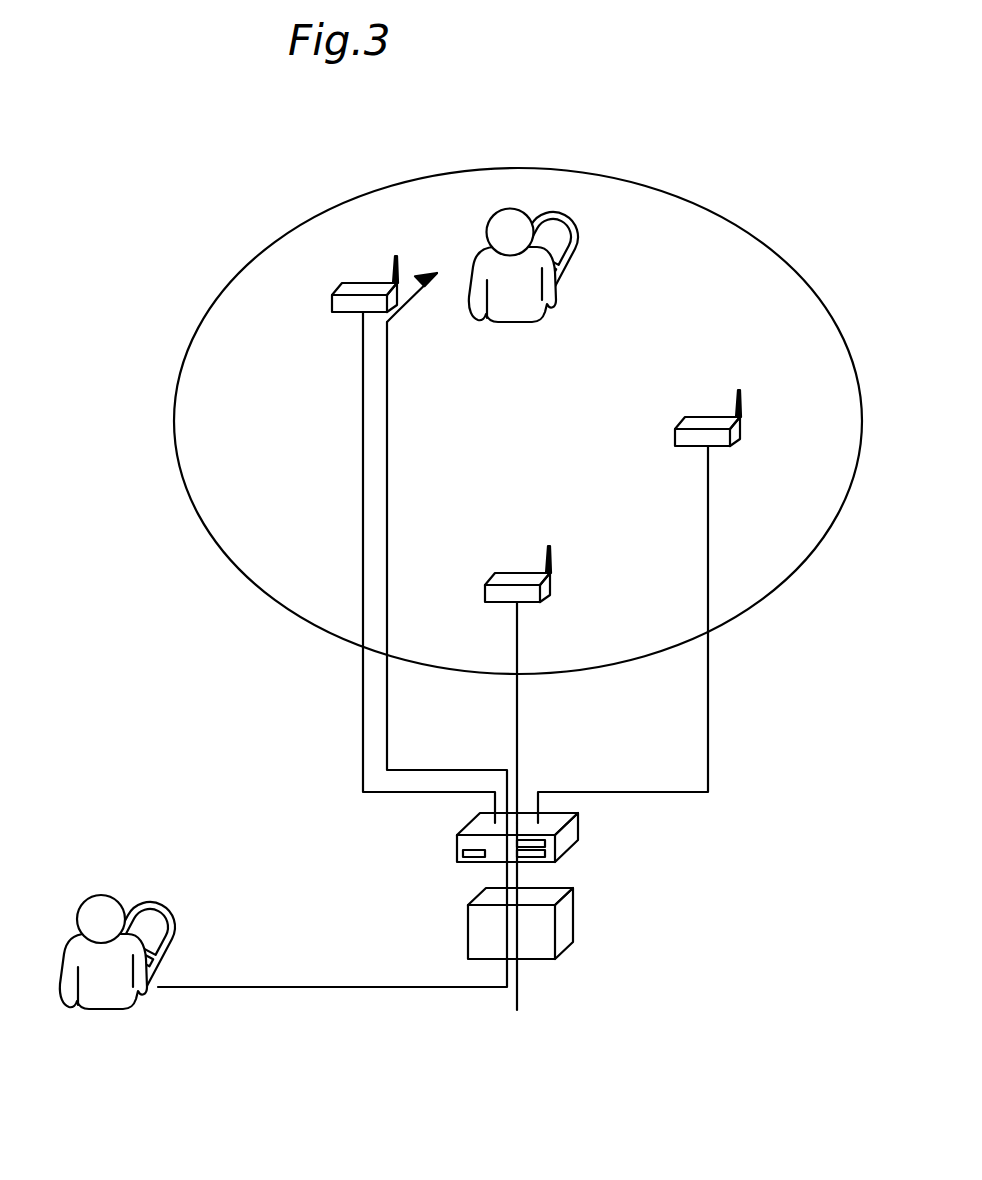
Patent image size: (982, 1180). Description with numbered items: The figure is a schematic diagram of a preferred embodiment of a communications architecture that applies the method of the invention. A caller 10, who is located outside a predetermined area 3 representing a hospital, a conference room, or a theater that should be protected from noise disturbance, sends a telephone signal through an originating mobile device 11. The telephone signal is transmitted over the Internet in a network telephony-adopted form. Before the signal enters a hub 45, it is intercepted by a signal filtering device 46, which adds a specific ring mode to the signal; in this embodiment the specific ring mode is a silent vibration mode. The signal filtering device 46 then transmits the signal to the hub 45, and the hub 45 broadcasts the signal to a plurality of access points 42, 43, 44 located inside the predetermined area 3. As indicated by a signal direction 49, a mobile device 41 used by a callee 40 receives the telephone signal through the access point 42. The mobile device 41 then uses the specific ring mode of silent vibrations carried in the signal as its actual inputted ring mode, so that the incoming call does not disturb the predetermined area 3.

The predetermined area 3 is at (222, 287).
The caller 10 is at (102, 896).
The originating mobile device 11 is at (158, 901).
The callee 40 is at (510, 218).
The mobile device 41 is at (570, 213).
The access point 42 is at (338, 302).
The access point 43 is at (489, 593).
The access point 44 is at (681, 438).
The hub 45 is at (462, 838).
The signal filtering device 46 is at (480, 930).
The signal direction 49 is at (387, 435).